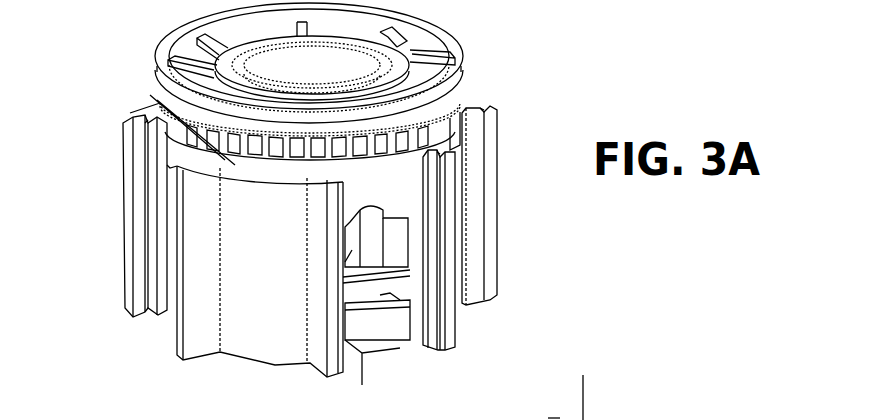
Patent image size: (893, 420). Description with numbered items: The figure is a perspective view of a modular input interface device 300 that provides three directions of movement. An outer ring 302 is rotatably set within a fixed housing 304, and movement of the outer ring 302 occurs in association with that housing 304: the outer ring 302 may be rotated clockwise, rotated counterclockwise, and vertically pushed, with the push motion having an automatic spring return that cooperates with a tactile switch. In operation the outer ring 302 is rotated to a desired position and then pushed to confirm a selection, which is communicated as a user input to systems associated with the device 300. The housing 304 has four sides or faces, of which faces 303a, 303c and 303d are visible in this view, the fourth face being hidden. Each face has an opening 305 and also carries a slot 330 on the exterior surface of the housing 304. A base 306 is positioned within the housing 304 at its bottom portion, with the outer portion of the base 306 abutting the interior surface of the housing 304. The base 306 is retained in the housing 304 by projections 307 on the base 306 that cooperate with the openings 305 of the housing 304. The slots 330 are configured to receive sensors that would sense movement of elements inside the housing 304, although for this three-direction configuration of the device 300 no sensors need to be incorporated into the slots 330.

The modular input interface device 300 is at (126, 90).
The outer ring 302 is at (445, 38).
The face 303a is at (400, 197).
The face 303c is at (480, 92).
The face 303d is at (170, 165).
The housing 304 is at (273, 367).
The opening 305 is at (400, 267).
The base 306 is at (380, 318).
The projection 307 is at (388, 342).
The slot 330 is at (487, 100).